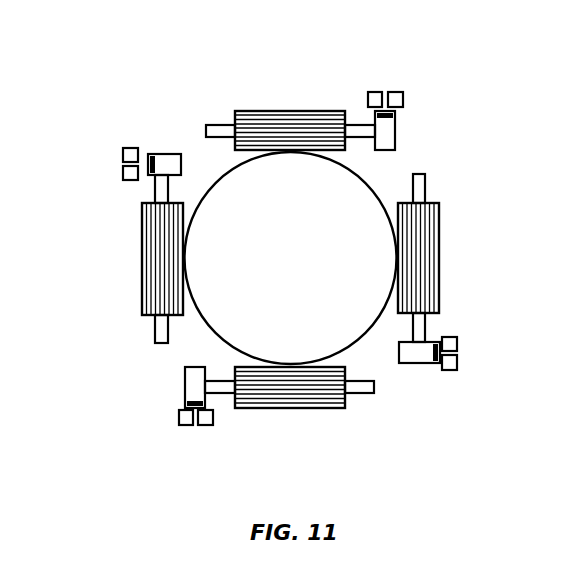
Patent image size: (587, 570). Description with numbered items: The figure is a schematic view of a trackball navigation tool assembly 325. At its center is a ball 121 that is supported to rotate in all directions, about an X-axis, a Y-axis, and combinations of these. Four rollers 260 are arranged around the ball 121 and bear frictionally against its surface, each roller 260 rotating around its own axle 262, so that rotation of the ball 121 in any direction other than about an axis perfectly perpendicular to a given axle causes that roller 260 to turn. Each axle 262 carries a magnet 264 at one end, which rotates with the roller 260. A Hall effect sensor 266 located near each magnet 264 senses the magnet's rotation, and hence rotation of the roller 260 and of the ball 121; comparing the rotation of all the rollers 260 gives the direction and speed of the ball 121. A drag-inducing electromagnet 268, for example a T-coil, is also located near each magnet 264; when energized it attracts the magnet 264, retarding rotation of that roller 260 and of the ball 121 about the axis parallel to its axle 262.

The trackball navigation tool assembly 325 is at (146, 45).
The ball 121 is at (308, 270).
The roller 260 is at (288, 112).
The axle 262 is at (215, 130).
The magnet 264 is at (163, 160).
The Hall effect sensor 266 is at (397, 97).
The drag-inducing electromagnet 268 is at (372, 96).